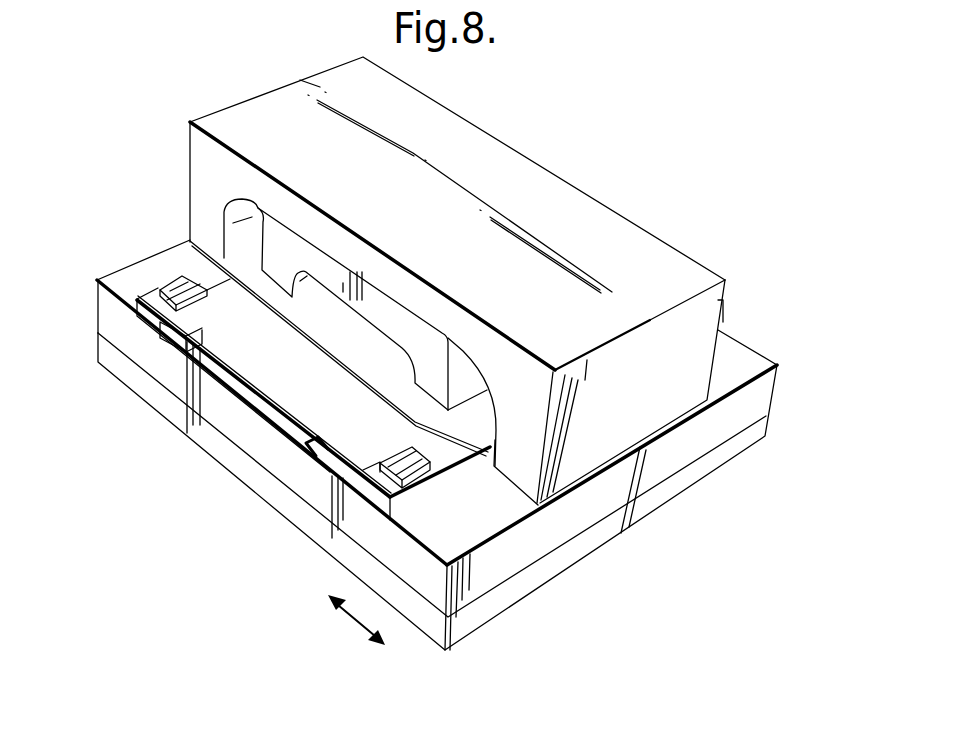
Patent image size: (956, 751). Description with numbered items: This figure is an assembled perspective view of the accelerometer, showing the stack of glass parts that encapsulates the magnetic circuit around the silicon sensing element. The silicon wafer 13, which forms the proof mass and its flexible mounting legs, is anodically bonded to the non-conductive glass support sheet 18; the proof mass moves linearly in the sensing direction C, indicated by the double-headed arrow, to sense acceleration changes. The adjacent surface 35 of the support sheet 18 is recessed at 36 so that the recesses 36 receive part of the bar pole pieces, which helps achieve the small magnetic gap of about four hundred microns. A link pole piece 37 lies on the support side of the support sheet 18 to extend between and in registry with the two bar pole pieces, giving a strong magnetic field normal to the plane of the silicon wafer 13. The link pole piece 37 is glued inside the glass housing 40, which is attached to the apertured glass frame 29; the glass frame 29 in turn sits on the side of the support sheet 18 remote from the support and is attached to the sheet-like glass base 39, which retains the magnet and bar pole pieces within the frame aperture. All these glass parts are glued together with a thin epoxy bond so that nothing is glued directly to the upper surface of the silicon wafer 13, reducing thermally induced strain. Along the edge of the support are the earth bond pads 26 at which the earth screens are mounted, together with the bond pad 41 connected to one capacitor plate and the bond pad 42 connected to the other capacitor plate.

The silicon wafer 13 is at (280, 378).
The support sheet 18 is at (413, 467).
The earth bond pads 26 is at (162, 325).
The apertured glass frame 29 is at (733, 413).
The adjacent surface 35 is at (272, 423).
The recesses 36 is at (197, 305).
The link pole piece 37 is at (293, 253).
The glass base 39 is at (542, 572).
The glass housing 40 is at (547, 183).
The bond pad 41 is at (417, 467).
The bond pad 42 is at (160, 290).
The sensing direction C is at (353, 623).